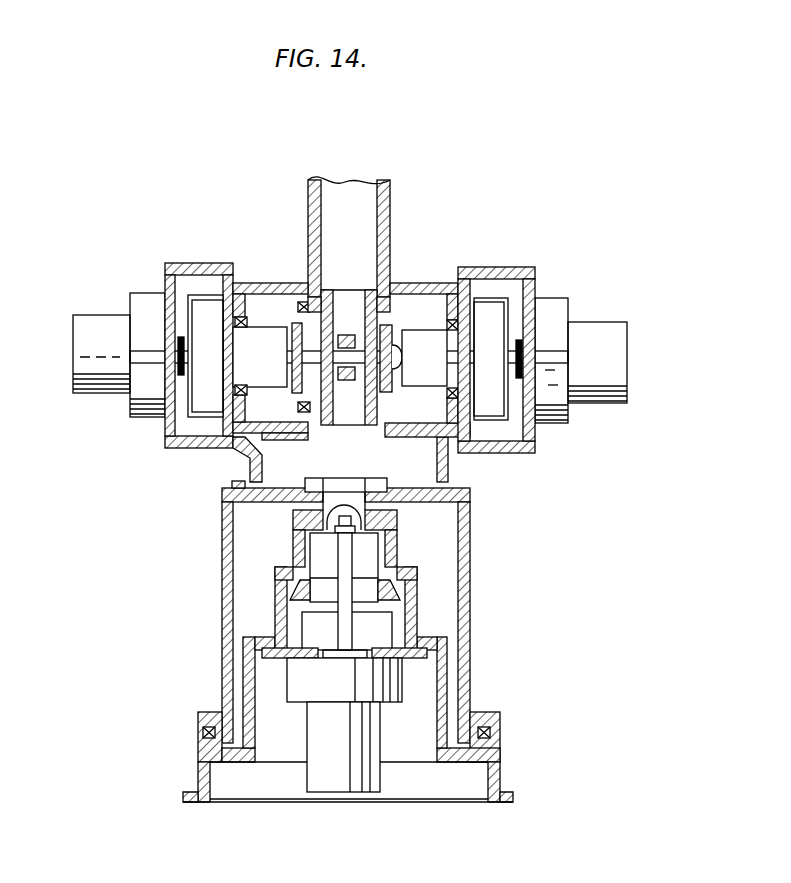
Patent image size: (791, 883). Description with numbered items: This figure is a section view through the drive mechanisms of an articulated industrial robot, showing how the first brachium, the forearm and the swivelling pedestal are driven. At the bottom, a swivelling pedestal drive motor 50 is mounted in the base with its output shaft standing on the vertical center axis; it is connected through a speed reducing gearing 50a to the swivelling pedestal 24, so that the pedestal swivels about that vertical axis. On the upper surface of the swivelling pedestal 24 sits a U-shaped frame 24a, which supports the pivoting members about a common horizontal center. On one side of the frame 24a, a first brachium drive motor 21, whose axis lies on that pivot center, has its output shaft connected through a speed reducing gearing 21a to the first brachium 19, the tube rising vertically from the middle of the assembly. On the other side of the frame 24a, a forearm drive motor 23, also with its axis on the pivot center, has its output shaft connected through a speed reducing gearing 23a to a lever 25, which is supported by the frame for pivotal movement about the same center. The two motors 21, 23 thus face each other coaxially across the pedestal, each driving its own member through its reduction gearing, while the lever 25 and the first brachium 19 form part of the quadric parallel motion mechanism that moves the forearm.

The first brachium 19 is at (390, 197).
The first brachium drive motor 21 is at (97, 313).
The speed reducing gearing 21a is at (264, 323).
The forearm drive motor 23 is at (577, 298).
The speed reducing gearing 23a is at (437, 325).
The swivelling pedestal 24 is at (222, 590).
The U-shaped frame 24a is at (201, 452).
The lever 25 is at (350, 332).
The swivelling pedestal drive motor 50 is at (405, 690).
The speed reducing gearing 50a is at (380, 557).